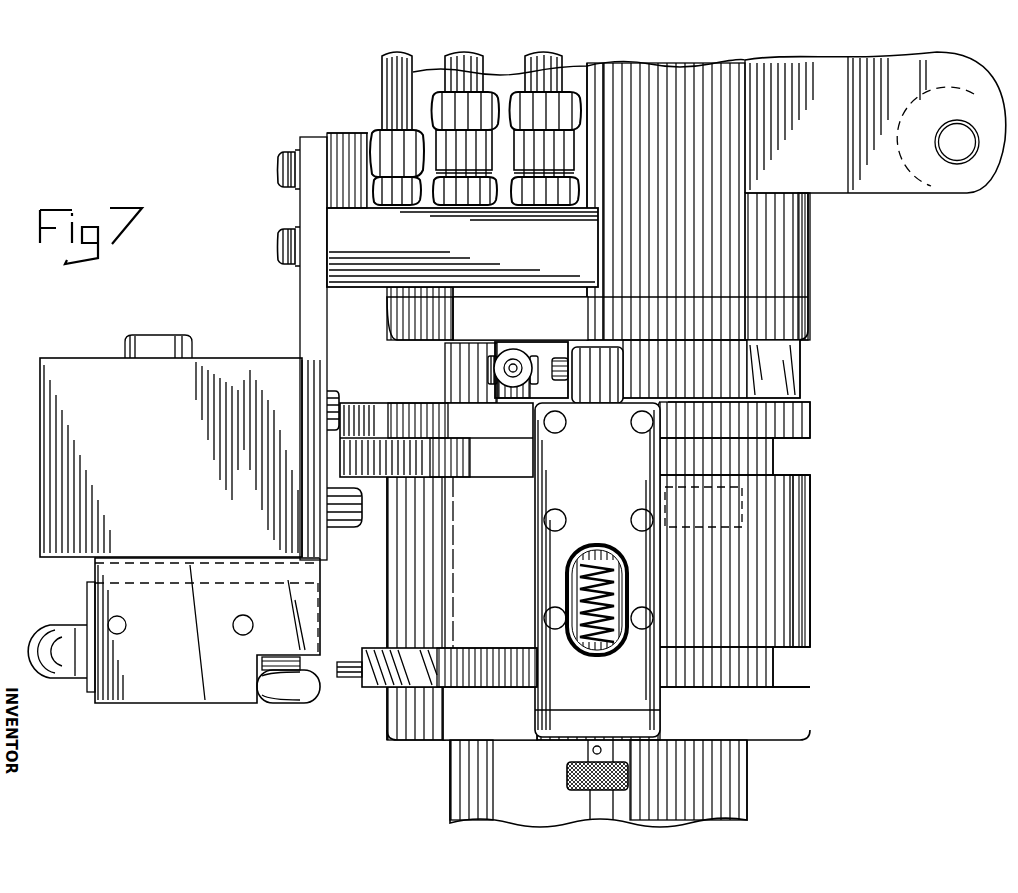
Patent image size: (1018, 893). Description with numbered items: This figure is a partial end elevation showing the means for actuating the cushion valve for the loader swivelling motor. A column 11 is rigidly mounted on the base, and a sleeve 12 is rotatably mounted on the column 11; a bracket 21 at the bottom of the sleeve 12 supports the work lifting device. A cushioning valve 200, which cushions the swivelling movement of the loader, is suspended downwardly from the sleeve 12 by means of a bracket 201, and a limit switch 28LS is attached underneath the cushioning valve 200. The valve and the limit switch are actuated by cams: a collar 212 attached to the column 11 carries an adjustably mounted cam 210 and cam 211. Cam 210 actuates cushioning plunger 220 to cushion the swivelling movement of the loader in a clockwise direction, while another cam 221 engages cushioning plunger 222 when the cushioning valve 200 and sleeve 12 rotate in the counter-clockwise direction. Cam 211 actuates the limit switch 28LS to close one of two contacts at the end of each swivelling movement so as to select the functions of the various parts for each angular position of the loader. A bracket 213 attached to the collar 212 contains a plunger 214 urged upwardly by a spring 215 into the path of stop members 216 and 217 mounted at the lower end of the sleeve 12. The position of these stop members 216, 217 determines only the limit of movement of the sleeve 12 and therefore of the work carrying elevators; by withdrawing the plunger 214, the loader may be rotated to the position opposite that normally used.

The column 11 is at (735, 787).
The sleeve 12 is at (793, 267).
The bracket 21 is at (907, 183).
The cushioning valve 200 is at (88, 373).
The bracket 201 is at (318, 285).
The cam 210 is at (357, 408).
The cam 211 is at (385, 653).
The collar 212 is at (807, 490).
The bracket 213 is at (653, 550).
The plunger 214 is at (613, 370).
The spring 215 is at (625, 598).
The stop member 216 is at (510, 350).
The stop member 217 is at (797, 362).
The cushioning plunger 220 is at (332, 390).
The cam 221 is at (742, 507).
The cushioning plunger 222 is at (343, 530).
The limit switch 28LS is at (155, 683).